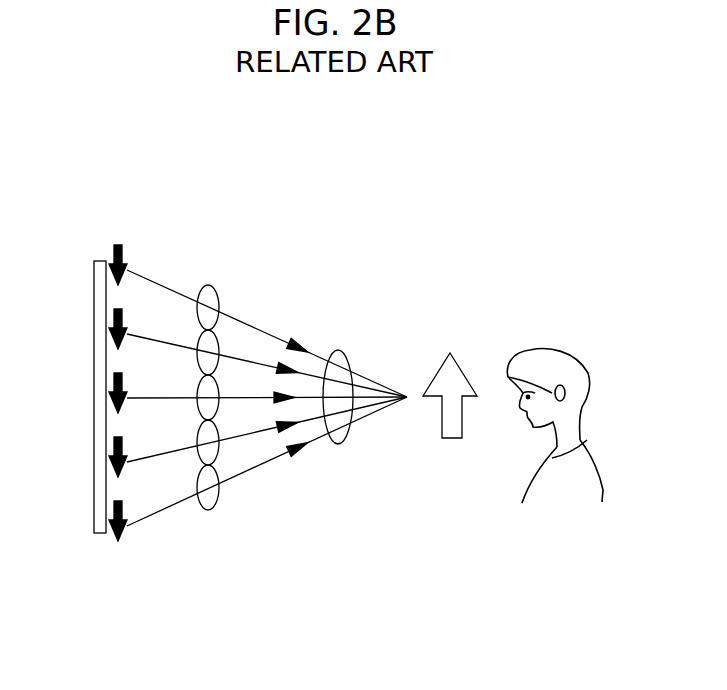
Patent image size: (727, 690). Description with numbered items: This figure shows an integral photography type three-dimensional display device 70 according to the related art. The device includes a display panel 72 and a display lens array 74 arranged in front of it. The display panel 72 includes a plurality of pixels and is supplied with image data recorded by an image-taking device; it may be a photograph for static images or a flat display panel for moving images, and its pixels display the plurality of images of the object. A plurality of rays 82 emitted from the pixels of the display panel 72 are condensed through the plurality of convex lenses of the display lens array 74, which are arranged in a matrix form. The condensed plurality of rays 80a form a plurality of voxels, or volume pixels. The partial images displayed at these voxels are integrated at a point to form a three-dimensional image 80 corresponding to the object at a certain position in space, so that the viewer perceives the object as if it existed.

The integral photography type three-dimensional display device 70 is at (87, 130).
The display panel 72 is at (102, 262).
The display lens array 74 is at (208, 285).
The three-dimensional image 80 is at (450, 351).
The condensed plurality of rays 80a is at (338, 351).
The plurality of rays 82 is at (128, 531).